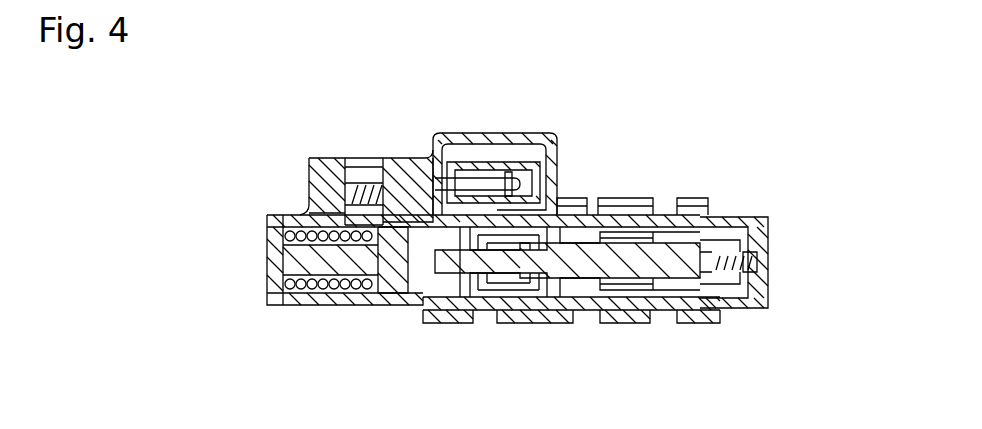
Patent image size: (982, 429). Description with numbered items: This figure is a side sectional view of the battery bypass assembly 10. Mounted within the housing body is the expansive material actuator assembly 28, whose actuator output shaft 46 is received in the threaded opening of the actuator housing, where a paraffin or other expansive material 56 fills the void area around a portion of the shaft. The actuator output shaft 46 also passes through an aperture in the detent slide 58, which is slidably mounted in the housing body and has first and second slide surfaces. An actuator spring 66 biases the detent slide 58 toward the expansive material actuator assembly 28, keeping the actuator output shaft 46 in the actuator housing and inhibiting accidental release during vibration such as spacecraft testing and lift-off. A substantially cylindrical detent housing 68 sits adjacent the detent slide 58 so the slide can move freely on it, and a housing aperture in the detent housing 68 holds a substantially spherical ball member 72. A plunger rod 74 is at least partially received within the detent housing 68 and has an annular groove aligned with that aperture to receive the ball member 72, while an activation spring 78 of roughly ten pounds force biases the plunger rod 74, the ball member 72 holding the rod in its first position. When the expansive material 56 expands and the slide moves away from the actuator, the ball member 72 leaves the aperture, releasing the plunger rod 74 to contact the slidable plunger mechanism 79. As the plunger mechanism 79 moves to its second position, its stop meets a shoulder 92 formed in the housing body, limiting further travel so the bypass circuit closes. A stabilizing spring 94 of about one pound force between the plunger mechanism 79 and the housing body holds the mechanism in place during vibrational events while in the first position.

The battery bypass assembly 10 is at (787, 163).
The expansive material actuator assembly 28 is at (459, 153).
The actuator output shaft 46 is at (520, 183).
The expansive material 56 is at (507, 168).
The detent slide 58 is at (397, 178).
The actuator spring 66 is at (343, 160).
The ball member 72 is at (388, 222).
The plunger rod 74 is at (293, 253).
The activation spring 78 is at (296, 224).
The plunger mechanism 79 is at (637, 260).
The shoulder 92 is at (583, 288).
The stabilizing spring 94 is at (748, 275).
The detent housing 68 is at (410, 285).